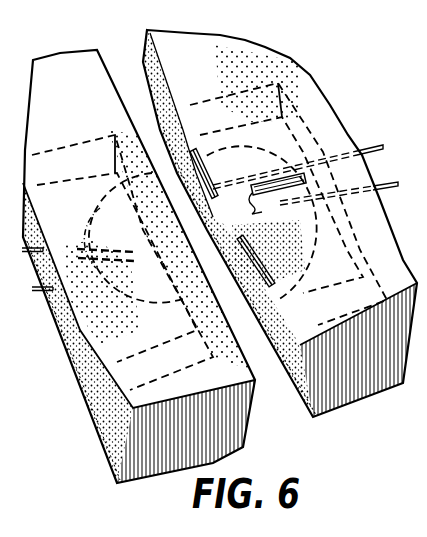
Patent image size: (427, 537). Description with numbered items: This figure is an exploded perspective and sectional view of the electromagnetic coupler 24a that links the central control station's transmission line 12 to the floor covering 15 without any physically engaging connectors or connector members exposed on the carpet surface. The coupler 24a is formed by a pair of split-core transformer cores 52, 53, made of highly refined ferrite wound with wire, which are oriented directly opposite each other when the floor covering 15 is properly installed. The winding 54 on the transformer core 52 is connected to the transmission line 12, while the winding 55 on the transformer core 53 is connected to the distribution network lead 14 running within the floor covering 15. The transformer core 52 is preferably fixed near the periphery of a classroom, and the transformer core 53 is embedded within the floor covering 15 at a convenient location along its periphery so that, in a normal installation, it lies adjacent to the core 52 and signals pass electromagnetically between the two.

The transmission line 12 is at (41, 292).
The distribution network lead 14 is at (399, 185).
The floor covering 15 is at (423, 91).
The transformer core 52 is at (150, 300).
The transformer core 53 is at (245, 148).
The winding 54 is at (133, 238).
The winding 55 is at (267, 171).
The coupler 24a is at (297, 434).